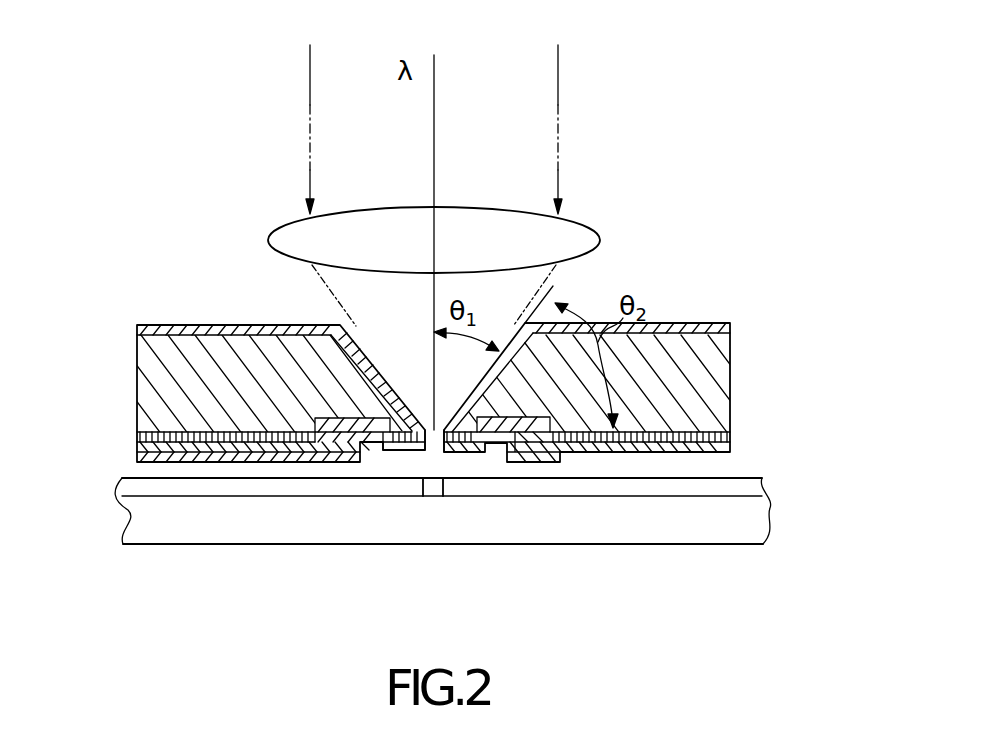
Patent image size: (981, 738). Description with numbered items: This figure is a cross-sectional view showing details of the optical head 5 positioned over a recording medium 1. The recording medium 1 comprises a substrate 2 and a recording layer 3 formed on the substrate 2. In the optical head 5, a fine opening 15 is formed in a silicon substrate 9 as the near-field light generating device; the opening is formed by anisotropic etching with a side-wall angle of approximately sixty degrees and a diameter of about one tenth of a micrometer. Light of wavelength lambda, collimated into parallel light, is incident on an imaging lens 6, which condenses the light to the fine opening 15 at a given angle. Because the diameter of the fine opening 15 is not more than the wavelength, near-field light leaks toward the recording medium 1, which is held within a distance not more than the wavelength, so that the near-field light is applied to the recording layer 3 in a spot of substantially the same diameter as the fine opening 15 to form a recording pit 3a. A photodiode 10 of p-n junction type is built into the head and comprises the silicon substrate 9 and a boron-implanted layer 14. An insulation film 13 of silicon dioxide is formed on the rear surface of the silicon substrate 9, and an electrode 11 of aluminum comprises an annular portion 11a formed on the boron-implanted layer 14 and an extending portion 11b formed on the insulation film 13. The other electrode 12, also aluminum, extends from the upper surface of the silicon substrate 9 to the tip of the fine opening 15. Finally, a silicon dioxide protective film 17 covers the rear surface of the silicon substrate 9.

The recording medium 1 is at (489, 538).
The substrate 2 is at (765, 518).
The recording layer 3 is at (490, 509).
The recording pit 3a is at (432, 488).
The optical head 5 is at (670, 274).
The imaging lens 6 is at (593, 241).
The silicon substrate 9 is at (147, 357).
The photodiode 10 is at (337, 385).
The electrode 11 is at (368, 484).
The annular portion 11a is at (532, 452).
The extending portion 11b is at (220, 447).
The electrode 12 is at (173, 325).
The insulation film 13 is at (137, 432).
The boron-implanted layer 14 is at (332, 418).
The fine opening 15 is at (433, 447).
The protective film 17 is at (137, 455).